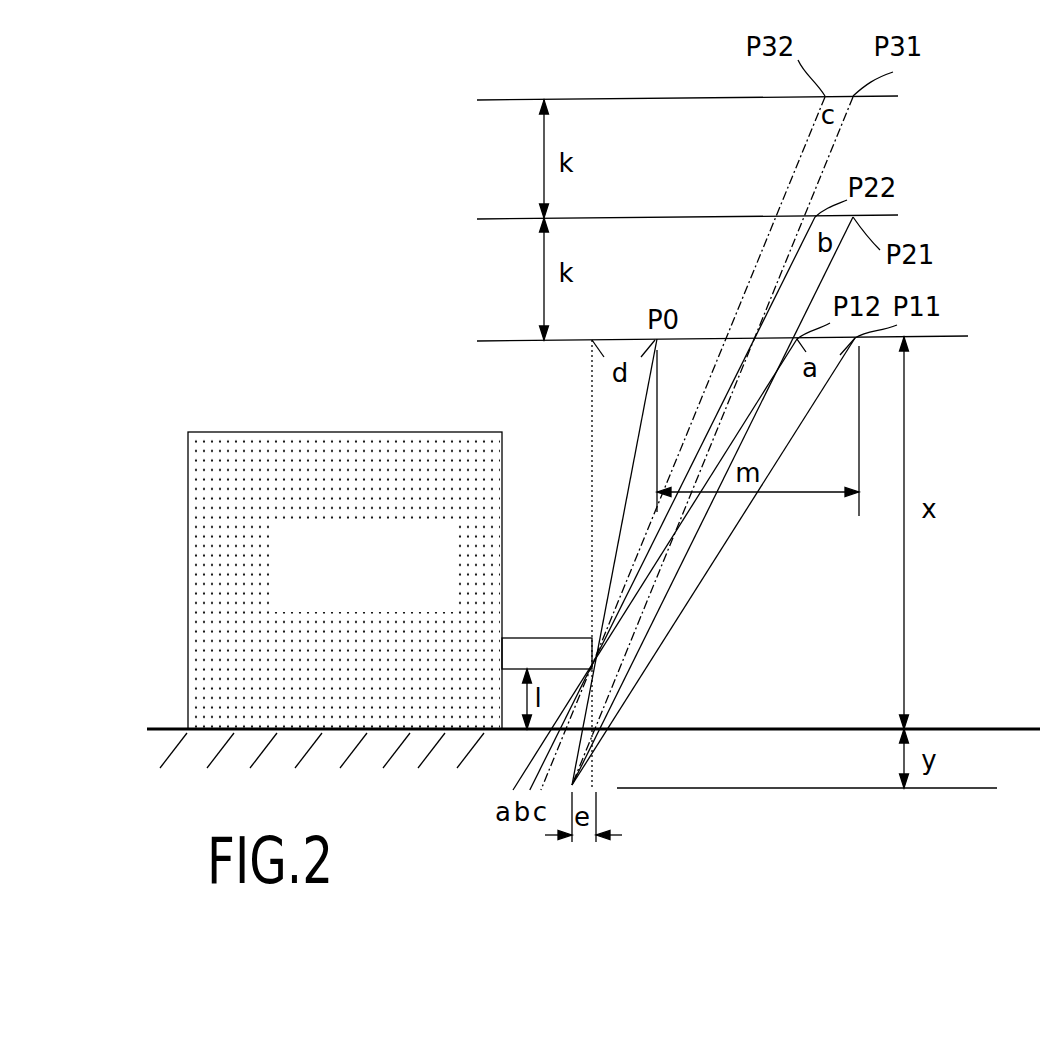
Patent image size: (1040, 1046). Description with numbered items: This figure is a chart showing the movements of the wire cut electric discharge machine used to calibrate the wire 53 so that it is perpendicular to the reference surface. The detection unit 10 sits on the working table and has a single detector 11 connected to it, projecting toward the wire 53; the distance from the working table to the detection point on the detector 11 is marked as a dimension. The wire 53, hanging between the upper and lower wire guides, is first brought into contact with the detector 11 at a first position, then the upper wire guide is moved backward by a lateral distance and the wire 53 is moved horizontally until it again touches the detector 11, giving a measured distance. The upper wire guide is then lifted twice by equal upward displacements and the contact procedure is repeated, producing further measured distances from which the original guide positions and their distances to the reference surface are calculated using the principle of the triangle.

The detection unit 10 is at (351, 455).
The detector 11 is at (541, 637).
The wire 53 is at (634, 453).